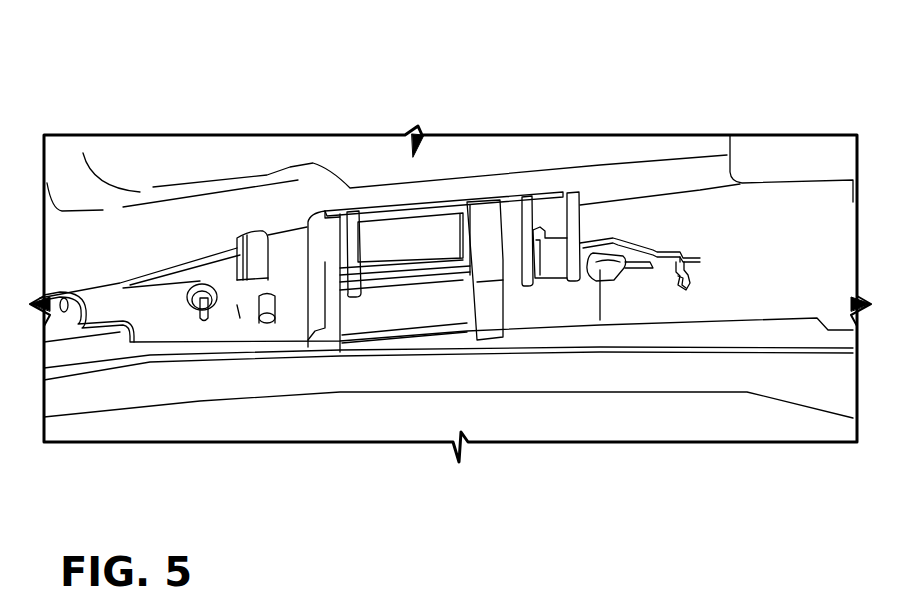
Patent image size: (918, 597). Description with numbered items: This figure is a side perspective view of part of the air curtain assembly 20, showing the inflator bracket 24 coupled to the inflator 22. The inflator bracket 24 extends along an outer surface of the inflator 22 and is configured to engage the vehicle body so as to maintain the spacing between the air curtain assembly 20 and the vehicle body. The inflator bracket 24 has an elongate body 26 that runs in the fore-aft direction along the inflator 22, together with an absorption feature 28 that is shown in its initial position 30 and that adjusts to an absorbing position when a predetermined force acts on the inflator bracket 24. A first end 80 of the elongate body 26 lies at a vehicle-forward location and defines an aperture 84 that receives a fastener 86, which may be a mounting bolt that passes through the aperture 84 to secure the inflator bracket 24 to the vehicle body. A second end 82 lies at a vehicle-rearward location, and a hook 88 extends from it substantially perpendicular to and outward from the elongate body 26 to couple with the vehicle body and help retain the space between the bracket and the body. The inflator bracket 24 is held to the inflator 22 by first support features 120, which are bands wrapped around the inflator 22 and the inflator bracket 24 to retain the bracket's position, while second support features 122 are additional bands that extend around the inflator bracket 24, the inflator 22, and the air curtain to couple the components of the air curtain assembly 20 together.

The air curtain assembly 20 is at (538, 124).
The inflator 22 is at (394, 235).
The inflator bracket 24 is at (648, 238).
The elongate body 26 is at (397, 278).
The absorption feature 28 is at (602, 280).
The initial position 30 is at (600, 260).
The first end 80 is at (237, 305).
The second end 82 is at (650, 263).
The aperture 84 is at (210, 280).
The fastener 86 is at (205, 305).
The hook 88 is at (683, 297).
The first support features 120 is at (353, 213).
The second support features 122 is at (325, 328).